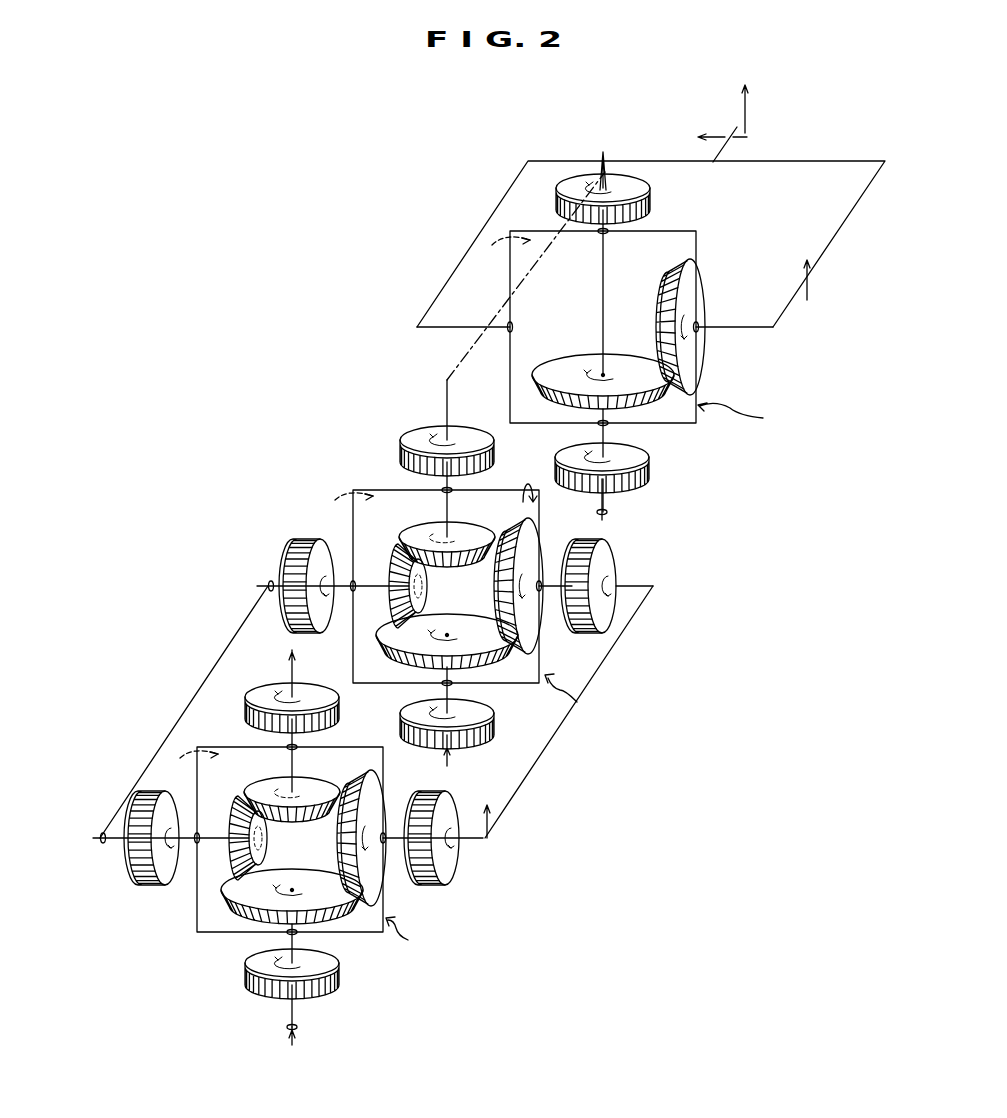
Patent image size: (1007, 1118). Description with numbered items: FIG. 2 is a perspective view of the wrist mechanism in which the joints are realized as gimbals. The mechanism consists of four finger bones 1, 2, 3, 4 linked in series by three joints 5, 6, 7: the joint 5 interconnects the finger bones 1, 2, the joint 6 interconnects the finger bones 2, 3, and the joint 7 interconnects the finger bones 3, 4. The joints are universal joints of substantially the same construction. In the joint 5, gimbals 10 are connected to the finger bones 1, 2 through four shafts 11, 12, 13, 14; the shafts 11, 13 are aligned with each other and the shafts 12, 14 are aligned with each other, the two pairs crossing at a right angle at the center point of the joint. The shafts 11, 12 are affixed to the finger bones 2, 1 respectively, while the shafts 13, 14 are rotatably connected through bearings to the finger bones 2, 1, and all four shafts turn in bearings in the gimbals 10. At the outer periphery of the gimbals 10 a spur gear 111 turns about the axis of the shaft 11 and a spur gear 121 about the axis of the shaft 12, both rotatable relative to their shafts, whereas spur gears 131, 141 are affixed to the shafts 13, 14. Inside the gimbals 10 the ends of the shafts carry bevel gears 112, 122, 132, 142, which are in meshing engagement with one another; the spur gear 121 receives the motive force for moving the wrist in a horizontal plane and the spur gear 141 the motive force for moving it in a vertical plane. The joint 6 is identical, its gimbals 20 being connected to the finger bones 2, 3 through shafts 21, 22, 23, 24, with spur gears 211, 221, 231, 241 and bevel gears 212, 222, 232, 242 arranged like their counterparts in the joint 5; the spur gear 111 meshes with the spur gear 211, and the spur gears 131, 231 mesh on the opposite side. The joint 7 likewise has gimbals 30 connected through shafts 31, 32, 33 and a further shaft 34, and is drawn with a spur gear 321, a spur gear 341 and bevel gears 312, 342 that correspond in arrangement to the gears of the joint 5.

The finger bone 1 is at (288, 662).
The finger bone 2 is at (103, 833).
The finger bone 3 is at (447, 380).
The finger bone 4 is at (822, 246).
The joint 5 is at (406, 939).
The joint 6 is at (571, 699).
The joint 7 is at (735, 418).
The gimbals 10 is at (386, 905).
The shaft 11 is at (398, 832).
The shaft 12 is at (293, 754).
The shaft 13 is at (197, 841).
The shaft 14 is at (297, 945).
The gimbals 20 is at (542, 665).
The shaft 21 is at (569, 596).
The shaft 22 is at (448, 502).
The shaft 23 is at (372, 582).
The shaft 24 is at (452, 750).
The gimbals 30 is at (698, 395).
The shaft 31 is at (743, 326).
The shaft 32 is at (606, 166).
The shaft 33 is at (470, 327).
The shaft 34 is at (607, 433).
The spur gear 111 is at (452, 870).
The bevel gear 112 is at (361, 813).
The spur gear 121 is at (292, 708).
The bevel gear 122 is at (268, 783).
The spur gear 131 is at (140, 880).
The bevel gear 132 is at (233, 812).
The spur gear 141 is at (330, 985).
The bevel gear 142 is at (234, 920).
The spur gear 211 is at (622, 586).
The bevel gear 212 is at (528, 522).
The spur gear 221 is at (405, 440).
The bevel gear 222 is at (415, 528).
The spur gear 231 is at (303, 540).
The bevel gear 232 is at (395, 614).
The spur gear 241 is at (497, 721).
The bevel gear 242 is at (394, 665).
The bevel gear 312 is at (663, 283).
The spur gear 321 is at (648, 200).
The spur gear 341 is at (650, 470).
The bevel gear 342 is at (568, 374).